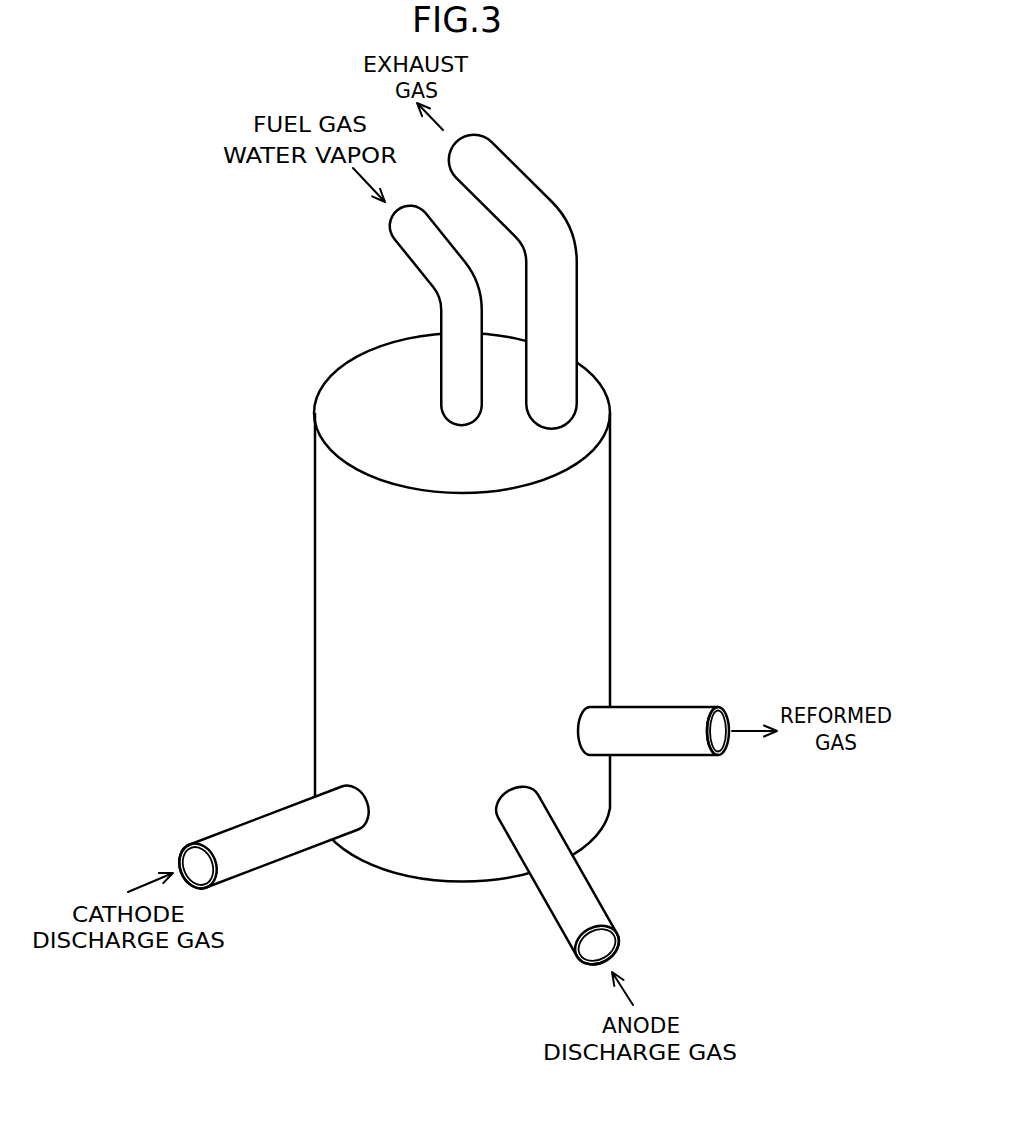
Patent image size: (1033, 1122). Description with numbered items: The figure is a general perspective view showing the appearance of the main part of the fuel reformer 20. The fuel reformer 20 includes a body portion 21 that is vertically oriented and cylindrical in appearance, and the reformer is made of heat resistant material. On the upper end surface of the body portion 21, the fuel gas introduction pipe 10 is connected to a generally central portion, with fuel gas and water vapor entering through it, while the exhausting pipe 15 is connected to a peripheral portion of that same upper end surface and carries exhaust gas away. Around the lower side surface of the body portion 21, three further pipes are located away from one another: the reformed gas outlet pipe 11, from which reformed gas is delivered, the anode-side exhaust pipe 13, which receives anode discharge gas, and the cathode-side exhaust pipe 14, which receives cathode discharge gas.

The fuel gas introduction pipe 10 is at (422, 245).
The reformed gas outlet pipe 11 is at (657, 713).
The anode-side exhaust pipe 13 is at (578, 887).
The cathode-side exhaust pipe 14 is at (255, 832).
The exhausting pipe 15 is at (515, 175).
The fuel reformer 20 is at (714, 392).
The body portion 21 is at (593, 493).